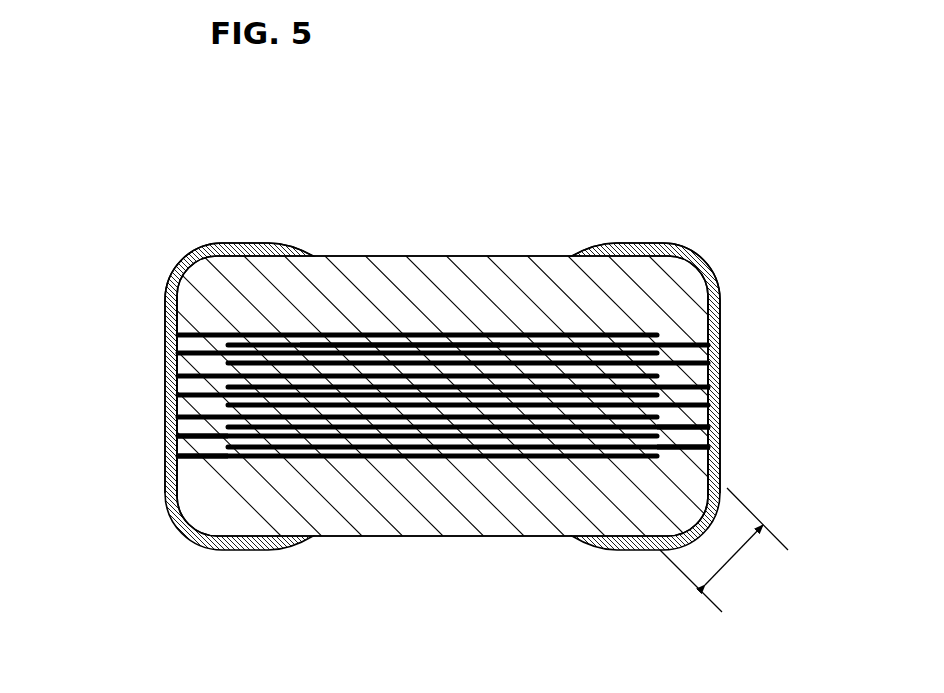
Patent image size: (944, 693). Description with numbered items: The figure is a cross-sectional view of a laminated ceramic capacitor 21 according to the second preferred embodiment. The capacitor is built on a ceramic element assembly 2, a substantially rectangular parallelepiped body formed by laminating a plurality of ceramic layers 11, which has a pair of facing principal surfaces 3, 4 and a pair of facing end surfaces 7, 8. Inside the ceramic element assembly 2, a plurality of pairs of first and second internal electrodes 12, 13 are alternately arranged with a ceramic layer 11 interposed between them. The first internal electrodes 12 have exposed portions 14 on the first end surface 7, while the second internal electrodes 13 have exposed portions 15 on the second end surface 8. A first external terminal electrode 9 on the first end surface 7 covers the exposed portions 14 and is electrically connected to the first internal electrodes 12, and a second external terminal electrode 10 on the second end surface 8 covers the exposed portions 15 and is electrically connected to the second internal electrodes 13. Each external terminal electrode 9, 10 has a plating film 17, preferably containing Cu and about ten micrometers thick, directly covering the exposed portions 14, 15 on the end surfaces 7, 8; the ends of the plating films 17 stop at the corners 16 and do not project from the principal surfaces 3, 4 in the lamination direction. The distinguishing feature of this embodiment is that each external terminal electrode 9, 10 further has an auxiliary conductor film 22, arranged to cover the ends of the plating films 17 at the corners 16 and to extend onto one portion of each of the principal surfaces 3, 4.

The laminated ceramic capacitor 21 is at (127, 114).
The ceramic element assembly 2 is at (513, 253).
The principal surface 3 is at (440, 255).
The principal surface 4 is at (420, 537).
The first end surface 7 is at (178, 367).
The second end surface 8 is at (707, 353).
The first external terminal electrode 9 is at (72, 222).
The second external terminal electrode 10 is at (818, 223).
The ceramic layer 11 is at (407, 344).
The first internal electrode 12 is at (220, 350).
The second internal electrode 13 is at (697, 358).
The exposed portion 14 is at (167, 455).
The exposed portion 15 is at (709, 447).
The corner 16 is at (735, 557).
The plating film 17 is at (168, 298).
The auxiliary conductor film 22 is at (190, 248).